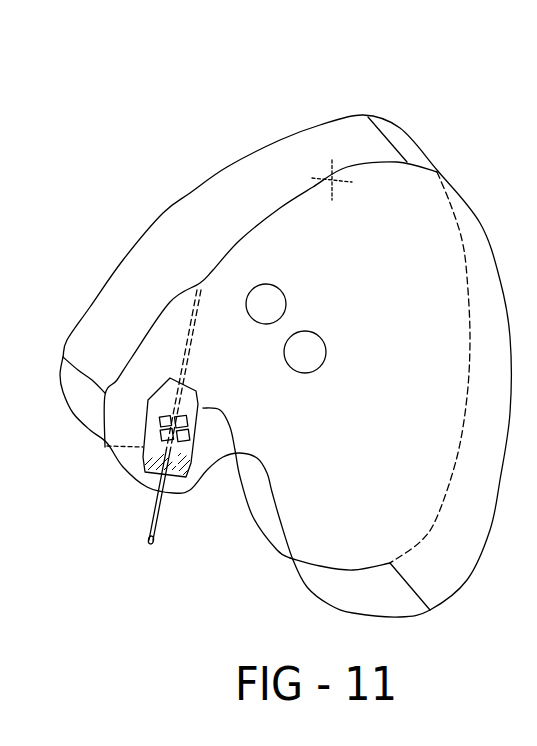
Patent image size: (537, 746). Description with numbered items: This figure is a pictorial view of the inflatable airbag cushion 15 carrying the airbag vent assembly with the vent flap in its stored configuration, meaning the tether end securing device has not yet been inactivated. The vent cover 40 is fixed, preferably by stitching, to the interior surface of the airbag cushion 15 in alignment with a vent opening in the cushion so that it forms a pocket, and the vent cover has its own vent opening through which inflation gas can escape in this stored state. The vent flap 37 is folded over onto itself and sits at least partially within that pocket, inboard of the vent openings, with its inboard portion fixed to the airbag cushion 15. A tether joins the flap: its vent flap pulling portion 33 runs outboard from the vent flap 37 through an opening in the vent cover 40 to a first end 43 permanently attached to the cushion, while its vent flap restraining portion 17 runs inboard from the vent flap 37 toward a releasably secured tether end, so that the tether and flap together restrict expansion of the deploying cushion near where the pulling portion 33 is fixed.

The airbag cushion 15 is at (228, 167).
The vent flap restraining portion 17 is at (152, 507).
The vent flap pulling portion 33 is at (193, 317).
The vent flap 37 is at (190, 478).
The vent cover 40 is at (198, 395).
The first end 43 is at (199, 290).